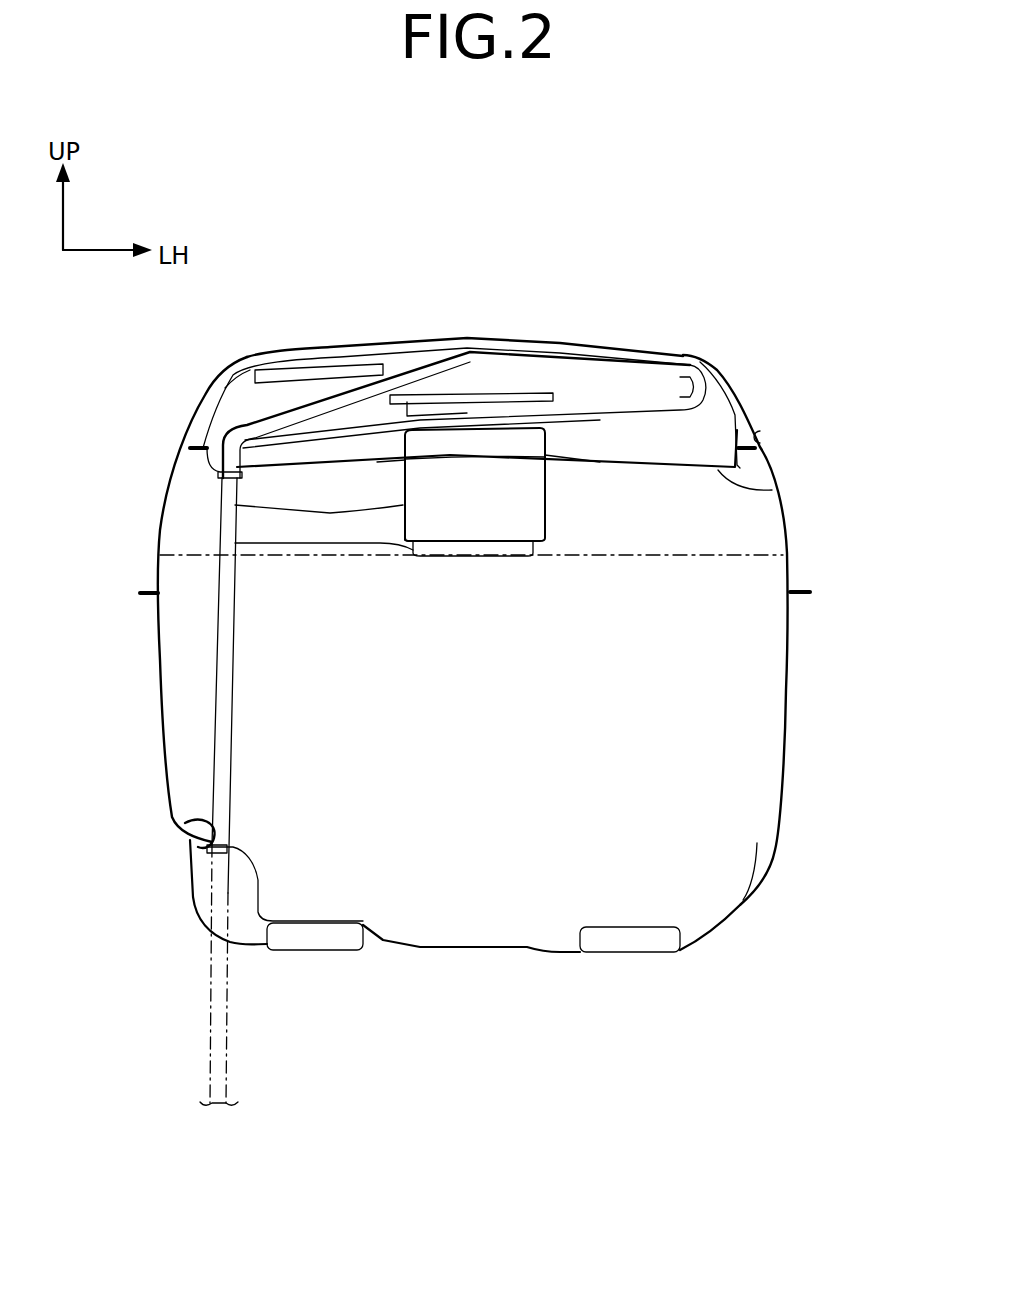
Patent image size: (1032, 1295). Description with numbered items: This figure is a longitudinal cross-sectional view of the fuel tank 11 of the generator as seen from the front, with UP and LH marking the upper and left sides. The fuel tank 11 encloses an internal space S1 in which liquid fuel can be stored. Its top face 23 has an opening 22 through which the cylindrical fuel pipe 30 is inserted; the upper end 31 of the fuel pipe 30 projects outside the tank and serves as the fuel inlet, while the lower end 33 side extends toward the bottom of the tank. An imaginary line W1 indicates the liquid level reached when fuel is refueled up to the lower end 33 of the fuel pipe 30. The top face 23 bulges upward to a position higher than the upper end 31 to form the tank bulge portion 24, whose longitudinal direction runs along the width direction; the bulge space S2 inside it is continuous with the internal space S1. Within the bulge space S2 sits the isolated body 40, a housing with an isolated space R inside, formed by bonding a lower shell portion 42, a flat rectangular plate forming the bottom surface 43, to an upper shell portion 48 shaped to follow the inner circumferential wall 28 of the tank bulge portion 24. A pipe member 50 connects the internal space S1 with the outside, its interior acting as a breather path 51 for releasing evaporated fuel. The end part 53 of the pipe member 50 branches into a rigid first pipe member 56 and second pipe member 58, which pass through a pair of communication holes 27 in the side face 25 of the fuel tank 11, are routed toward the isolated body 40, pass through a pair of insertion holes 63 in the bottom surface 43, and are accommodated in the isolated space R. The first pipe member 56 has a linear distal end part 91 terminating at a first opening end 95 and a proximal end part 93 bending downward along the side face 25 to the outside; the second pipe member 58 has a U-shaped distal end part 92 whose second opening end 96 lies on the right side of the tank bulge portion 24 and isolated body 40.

The fuel tank 11 is at (748, 361).
The opening 22 is at (413, 435).
The top face 23 is at (190, 450).
The tank bulge portion 24 is at (193, 420).
The side face 25 is at (165, 690).
The communication holes 27 is at (185, 828).
The inner circumferential wall 28 is at (761, 440).
The fuel pipe 30 is at (235, 505).
The upper end 31 is at (420, 445).
The lower end 33 is at (235, 543).
The isolated body 40 is at (660, 353).
The lower shell portion 42 is at (742, 469).
The bottom surface 43 is at (776, 492).
The upper shell portion 48 is at (731, 393).
The pipe member 50 is at (210, 1012).
The breather path 51 is at (210, 1070).
The end part 53 is at (205, 740).
The first pipe member 56 is at (255, 420).
The second pipe member 58 is at (230, 443).
The insertion holes 63 is at (220, 483).
The distal end part 91 is at (567, 363).
The distal end part 92 is at (413, 367).
The proximal end part 93 is at (226, 507).
The first opening end 95 is at (713, 367).
The second opening end 96 is at (236, 368).
The isolated space R is at (716, 431).
The internal space S1 is at (755, 725).
The bulge space S2 is at (756, 427).
The imaginary line W1 is at (752, 557).